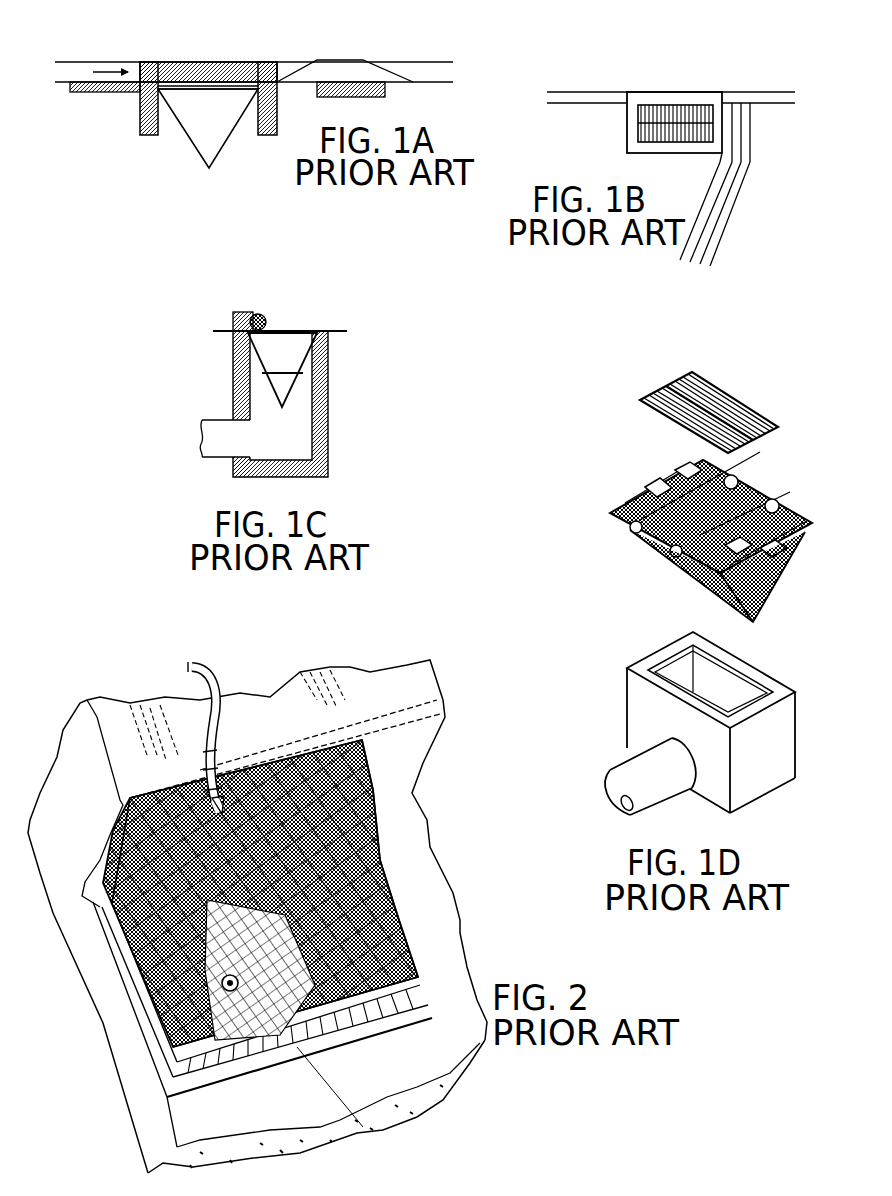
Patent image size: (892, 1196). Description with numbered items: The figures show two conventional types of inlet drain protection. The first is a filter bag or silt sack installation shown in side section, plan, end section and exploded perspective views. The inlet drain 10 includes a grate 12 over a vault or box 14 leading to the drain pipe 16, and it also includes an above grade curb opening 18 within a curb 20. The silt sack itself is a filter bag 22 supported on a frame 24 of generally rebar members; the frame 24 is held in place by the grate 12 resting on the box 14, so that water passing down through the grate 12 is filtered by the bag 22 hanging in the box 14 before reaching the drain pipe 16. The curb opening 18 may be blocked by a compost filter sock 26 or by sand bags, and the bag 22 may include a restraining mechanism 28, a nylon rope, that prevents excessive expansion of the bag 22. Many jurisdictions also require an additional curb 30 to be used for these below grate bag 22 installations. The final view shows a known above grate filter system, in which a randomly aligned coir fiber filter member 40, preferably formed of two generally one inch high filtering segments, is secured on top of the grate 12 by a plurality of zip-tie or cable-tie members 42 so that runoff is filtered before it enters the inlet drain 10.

In FIG. 1B, the inlet drain 10 is at (660, 58).
In FIG. 2, the inlet drain 10 is at (160, 1102).
In FIG. 1A, the grate 12 is at (226, 62).
In FIG. 1B, the grate 12 is at (690, 92).
In FIG. 1D, the grate 12 is at (660, 386).
In FIG. 2, the grate 12 is at (433, 1023).
In FIG. 1A, the box 14 is at (140, 126).
In FIG. 1C, the box 14 is at (330, 451).
In FIG. 1D, the box 14 is at (778, 735).
In FIG. 1C, the drain pipe 16 is at (214, 456).
In FIG. 1D, the drain pipe 16 is at (614, 774).
In FIG. 1A, the curb opening 18 is at (179, 62).
In FIG. 1C, the curb opening 18 is at (236, 338).
In FIG. 1A, the curb 20 is at (86, 62).
In FIG. 1B, the curb 20 is at (582, 92).
In FIG. 1C, the curb 20 is at (246, 318).
In FIG. 2, the curb 20 is at (430, 682).
In FIG. 1A, the filter bag 22 is at (216, 140).
In FIG. 1C, the filter bag 22 is at (292, 384).
In FIG. 1D, the filter bag 22 is at (704, 592).
In FIG. 1D, the frame 24 is at (626, 500).
In FIG. 1C, the compost filter sock 26 is at (268, 316).
In FIG. 1C, the restraining mechanism 28 is at (300, 372).
In FIG. 1A, the additional curb 30 is at (354, 60).
In FIG. 1B, the additional curb 30 is at (726, 200).
In FIG. 2, the coir fiber filter member 40 is at (398, 868).
In FIG. 2, the cable-tie members 42 is at (376, 832).